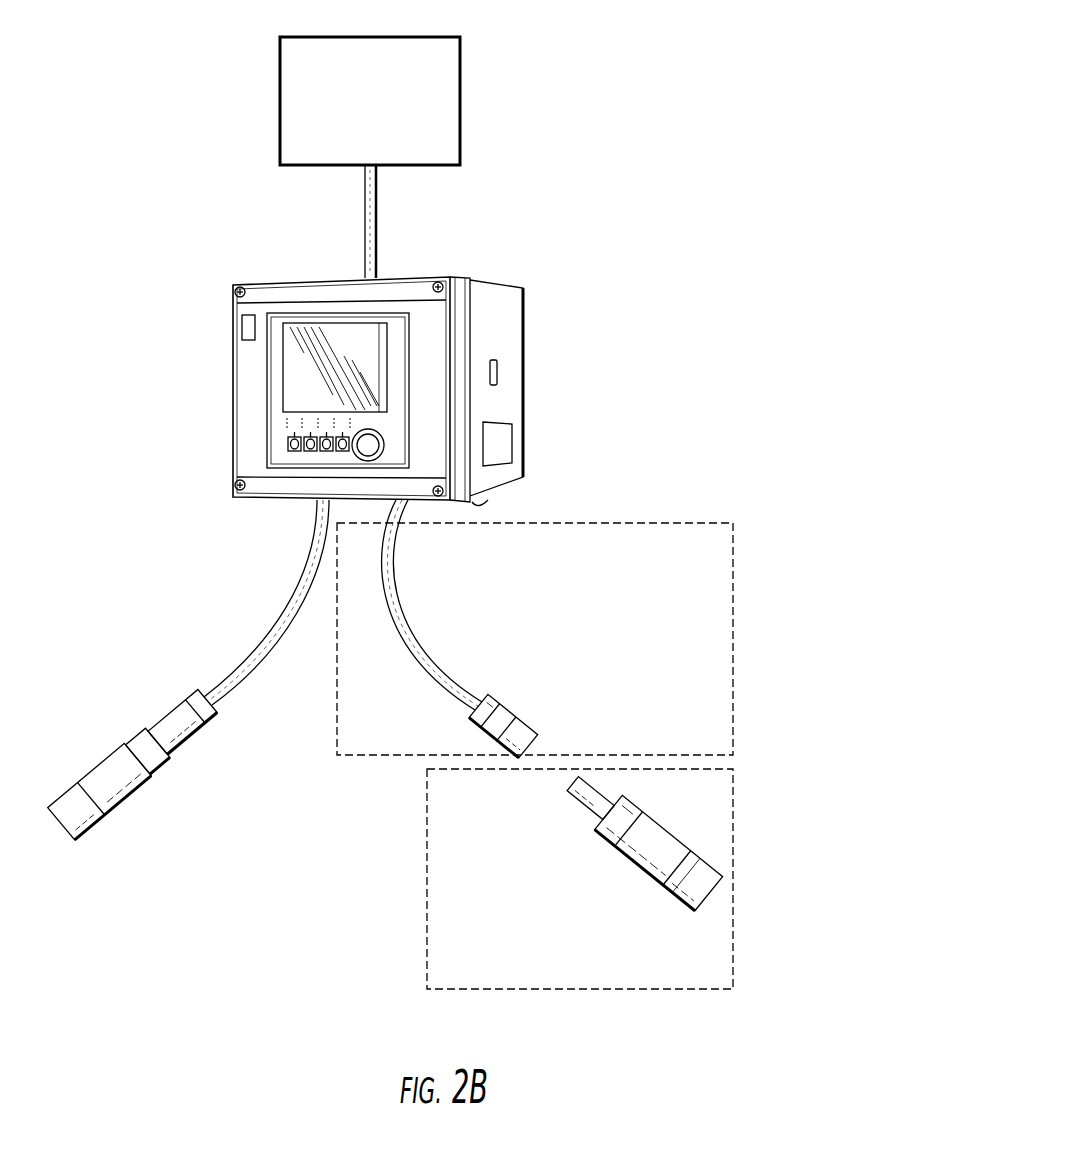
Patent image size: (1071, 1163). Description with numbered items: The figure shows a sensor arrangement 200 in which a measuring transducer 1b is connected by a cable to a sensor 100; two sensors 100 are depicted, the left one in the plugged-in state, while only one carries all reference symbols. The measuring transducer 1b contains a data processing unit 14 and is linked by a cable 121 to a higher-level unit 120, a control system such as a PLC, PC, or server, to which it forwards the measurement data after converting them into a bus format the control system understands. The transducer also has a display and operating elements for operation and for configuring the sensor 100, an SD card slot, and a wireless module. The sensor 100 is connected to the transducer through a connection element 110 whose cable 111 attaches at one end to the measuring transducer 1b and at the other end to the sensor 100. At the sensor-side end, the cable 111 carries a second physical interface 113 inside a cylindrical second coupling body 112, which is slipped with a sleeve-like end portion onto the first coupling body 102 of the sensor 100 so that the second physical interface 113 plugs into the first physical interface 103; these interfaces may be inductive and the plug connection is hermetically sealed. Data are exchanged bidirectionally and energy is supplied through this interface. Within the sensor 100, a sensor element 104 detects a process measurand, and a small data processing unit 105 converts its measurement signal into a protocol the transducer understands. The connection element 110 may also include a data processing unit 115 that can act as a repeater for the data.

The sensor arrangement 200 is at (793, 110).
The higher-level unit 120 is at (448, 120).
The cable 121 is at (370, 237).
The measuring transducer 1b is at (554, 305).
The data processing unit 14 is at (495, 452).
The connection element 110 is at (746, 527).
The cable 111 is at (408, 633).
The second coupling body 112 is at (467, 737).
The second physical interface 113 is at (527, 720).
The data processing unit 115 is at (490, 703).
The sensor 100 is at (746, 848).
The first coupling body 102 is at (641, 874).
The first physical interface 103 is at (583, 802).
The sensor element 104 is at (703, 885).
The data processing unit 105 is at (603, 832).